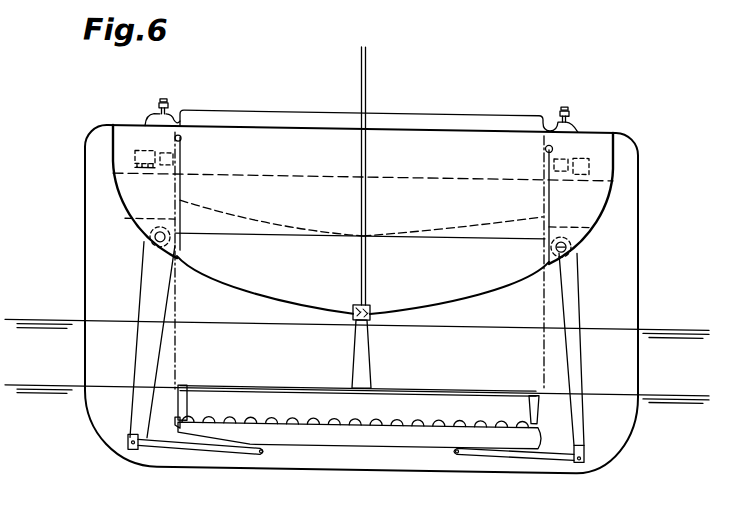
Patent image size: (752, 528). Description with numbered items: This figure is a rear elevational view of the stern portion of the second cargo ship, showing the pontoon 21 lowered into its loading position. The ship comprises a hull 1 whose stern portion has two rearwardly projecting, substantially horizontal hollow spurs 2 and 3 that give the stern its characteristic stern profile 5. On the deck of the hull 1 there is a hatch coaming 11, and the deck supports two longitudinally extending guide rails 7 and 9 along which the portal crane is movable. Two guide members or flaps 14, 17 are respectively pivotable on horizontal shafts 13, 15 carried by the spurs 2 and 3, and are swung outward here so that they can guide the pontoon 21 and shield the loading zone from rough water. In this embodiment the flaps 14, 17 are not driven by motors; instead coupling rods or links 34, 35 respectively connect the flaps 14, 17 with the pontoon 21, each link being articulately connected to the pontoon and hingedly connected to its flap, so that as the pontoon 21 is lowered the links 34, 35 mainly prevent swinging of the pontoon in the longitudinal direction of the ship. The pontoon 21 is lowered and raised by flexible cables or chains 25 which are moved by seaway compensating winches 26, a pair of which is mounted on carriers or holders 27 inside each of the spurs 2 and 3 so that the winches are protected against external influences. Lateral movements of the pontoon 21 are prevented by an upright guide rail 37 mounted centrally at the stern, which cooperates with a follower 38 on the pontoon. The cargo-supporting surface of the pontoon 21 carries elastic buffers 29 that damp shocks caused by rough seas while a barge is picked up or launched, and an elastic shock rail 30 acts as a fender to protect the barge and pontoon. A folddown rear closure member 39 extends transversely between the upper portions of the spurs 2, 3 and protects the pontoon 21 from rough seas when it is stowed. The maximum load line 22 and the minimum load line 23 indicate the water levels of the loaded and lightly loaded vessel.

The hull 1 is at (618, 419).
The spur 2 is at (125, 146).
The spur 3 is at (609, 152).
The stern profile 5 is at (252, 298).
The guide rail 7 is at (164, 103).
The guide rail 9 is at (567, 106).
The hatch coaming 11 is at (483, 116).
The horizontal shaft 13 is at (153, 242).
The flap 14 is at (147, 285).
The horizontal shaft 15 is at (586, 243).
The flap 17 is at (573, 284).
The pontoon 21 is at (426, 440).
The maximum load line 22 is at (32, 326).
The minimum load line 23 is at (30, 391).
The cables or chains 25 is at (182, 345).
The seaway compensating winch 26 is at (143, 153).
The carrier or holder 27 is at (130, 197).
The buffer 29 is at (374, 443).
The shock rail 30 is at (280, 390).
The coupling rod or link 34 is at (180, 454).
The coupling rod or link 35 is at (516, 452).
The upright guide rail 37 is at (366, 156).
The follower 38 is at (370, 347).
The folddown rear closure member 39 is at (262, 189).